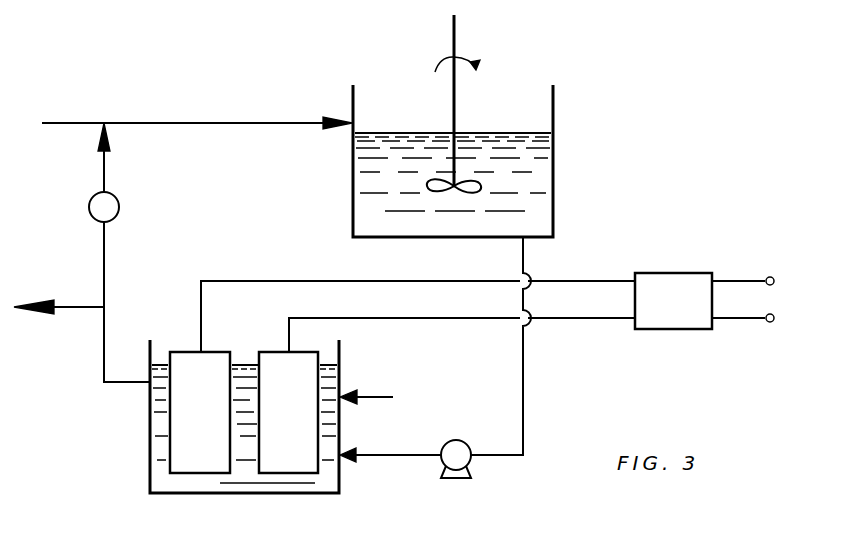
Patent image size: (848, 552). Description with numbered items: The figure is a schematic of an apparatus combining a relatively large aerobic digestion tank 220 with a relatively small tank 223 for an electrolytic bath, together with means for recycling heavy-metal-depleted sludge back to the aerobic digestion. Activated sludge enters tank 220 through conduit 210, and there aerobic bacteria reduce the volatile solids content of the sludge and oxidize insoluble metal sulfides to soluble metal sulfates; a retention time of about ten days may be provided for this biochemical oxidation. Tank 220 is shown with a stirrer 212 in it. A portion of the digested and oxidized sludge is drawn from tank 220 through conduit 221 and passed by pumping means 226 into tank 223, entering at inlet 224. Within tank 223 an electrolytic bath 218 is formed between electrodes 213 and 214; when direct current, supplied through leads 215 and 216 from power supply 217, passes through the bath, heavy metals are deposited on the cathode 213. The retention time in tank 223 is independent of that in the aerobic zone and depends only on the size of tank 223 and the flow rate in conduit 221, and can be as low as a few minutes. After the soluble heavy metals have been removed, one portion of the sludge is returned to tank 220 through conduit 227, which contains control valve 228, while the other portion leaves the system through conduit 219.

The conduit 210 is at (85, 123).
The stirrer 212 is at (458, 190).
The cathode 213 is at (183, 443).
The electrode 214 is at (305, 427).
The electrical lead 215 is at (560, 278).
The electrical lead 216 is at (558, 316).
The power supply 217 is at (663, 330).
The electrolytic bath 218 is at (247, 445).
The conduit 219 is at (68, 307).
The aerobic digestion tank 220 is at (555, 182).
The conduit 221 is at (525, 402).
The tank 223 is at (341, 478).
The inlet 224 is at (373, 395).
The pumping means 226 is at (448, 442).
The conduit 227 is at (106, 242).
The control valve 228 is at (118, 198).